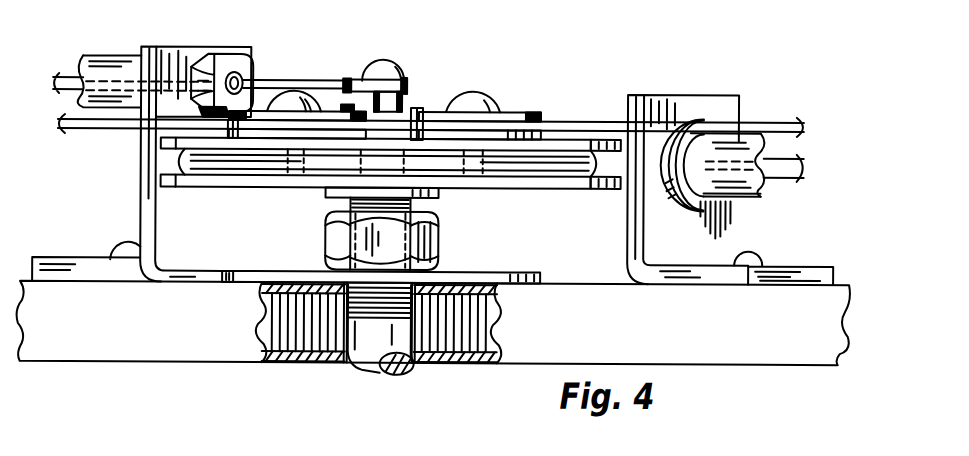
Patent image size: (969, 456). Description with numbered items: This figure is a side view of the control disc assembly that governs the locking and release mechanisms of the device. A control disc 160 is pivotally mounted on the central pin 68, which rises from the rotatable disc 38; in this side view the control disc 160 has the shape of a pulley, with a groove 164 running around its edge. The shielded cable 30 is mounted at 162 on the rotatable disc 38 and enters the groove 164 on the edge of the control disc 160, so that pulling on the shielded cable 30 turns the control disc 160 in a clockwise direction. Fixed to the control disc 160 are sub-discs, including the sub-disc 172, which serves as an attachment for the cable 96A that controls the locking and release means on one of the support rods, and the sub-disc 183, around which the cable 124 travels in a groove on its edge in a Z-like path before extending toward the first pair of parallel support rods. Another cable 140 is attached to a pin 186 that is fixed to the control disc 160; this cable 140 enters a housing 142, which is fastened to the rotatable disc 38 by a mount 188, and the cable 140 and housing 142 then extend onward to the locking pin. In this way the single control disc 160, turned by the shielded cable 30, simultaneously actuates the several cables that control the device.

The rotatable disc 38 is at (796, 342).
The central pin 68 is at (362, 361).
The control disc 160 is at (527, 189).
The groove 164 is at (573, 160).
The cable 124 is at (82, 131).
The housing 142 is at (100, 65).
The cable 96A is at (267, 113).
The mount 188 is at (72, 264).
The cable 140 is at (353, 79).
The pin 186 is at (392, 66).
The sub-disc 172 is at (327, 112).
The sub-disc 183 is at (510, 111).
The cable mount 162 is at (677, 108).
The shielded cable 30 is at (790, 177).